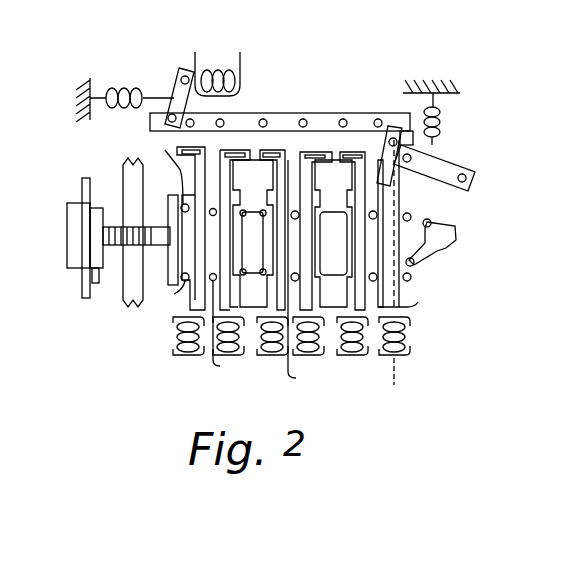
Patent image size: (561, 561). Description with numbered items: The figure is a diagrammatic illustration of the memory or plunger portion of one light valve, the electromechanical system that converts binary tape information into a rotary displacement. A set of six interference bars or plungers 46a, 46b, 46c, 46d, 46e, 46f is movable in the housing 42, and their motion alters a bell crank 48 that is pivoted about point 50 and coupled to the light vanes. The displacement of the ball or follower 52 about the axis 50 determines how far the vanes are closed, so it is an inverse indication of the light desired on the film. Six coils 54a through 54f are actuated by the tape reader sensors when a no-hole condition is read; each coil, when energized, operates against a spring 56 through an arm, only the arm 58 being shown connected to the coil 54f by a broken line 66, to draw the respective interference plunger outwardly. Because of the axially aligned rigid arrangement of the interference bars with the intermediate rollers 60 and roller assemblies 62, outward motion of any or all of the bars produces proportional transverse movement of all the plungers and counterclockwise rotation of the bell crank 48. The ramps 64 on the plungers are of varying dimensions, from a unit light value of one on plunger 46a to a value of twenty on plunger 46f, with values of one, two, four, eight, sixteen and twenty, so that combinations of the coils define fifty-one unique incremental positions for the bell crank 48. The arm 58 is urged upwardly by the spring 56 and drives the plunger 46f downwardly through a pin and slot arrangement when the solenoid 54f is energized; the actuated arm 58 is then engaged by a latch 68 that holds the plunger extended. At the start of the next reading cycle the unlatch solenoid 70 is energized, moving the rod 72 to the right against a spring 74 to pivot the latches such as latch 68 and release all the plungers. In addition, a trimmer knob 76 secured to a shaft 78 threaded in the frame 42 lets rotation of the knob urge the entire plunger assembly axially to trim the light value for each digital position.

The housing 42 is at (127, 282).
The interference plunger 46a is at (190, 310).
The interference plunger 46b is at (218, 163).
The interference plunger 46c is at (285, 173).
The interference plunger 46d is at (336, 165).
The interference plunger 46e is at (398, 125).
The interference plunger 46f is at (412, 305).
The bell crank 48 is at (449, 252).
The pivot point 50 is at (432, 222).
The ball 52 is at (415, 267).
The coil 54a is at (182, 356).
The coil 54f is at (385, 356).
The spring 56 is at (441, 114).
The arm 58 is at (447, 160).
The intermediate roller 60 is at (262, 271).
The roller assembly 62 is at (255, 275).
The ramp 64 is at (158, 128).
The broken line 66 is at (397, 371).
The latch 68 is at (441, 134).
The unlatch solenoid 70 is at (215, 70).
The rod 72 is at (283, 117).
The spring 74 is at (131, 96).
The trimmer knob 76 is at (78, 220).
The shaft 78 is at (157, 246).